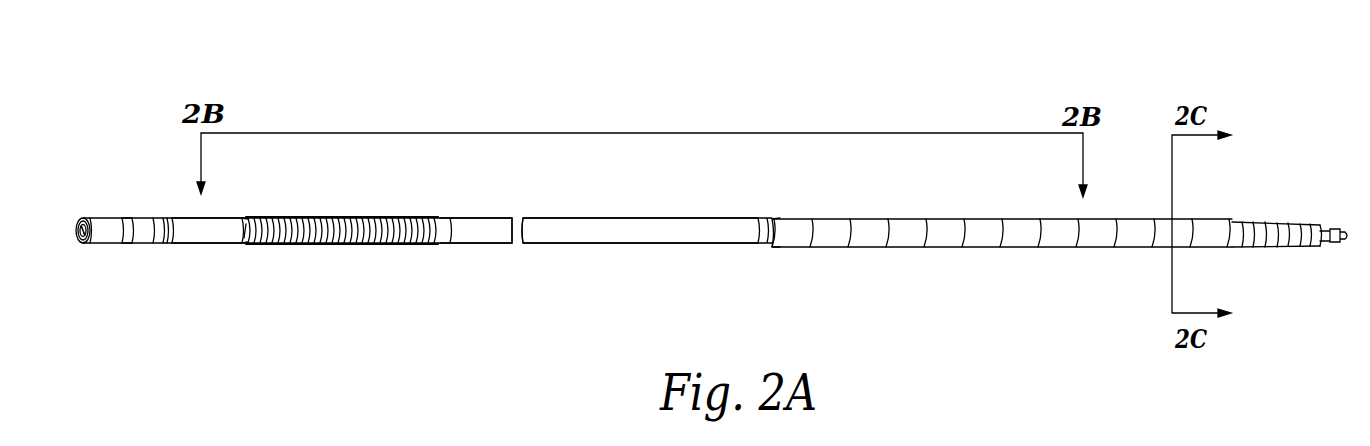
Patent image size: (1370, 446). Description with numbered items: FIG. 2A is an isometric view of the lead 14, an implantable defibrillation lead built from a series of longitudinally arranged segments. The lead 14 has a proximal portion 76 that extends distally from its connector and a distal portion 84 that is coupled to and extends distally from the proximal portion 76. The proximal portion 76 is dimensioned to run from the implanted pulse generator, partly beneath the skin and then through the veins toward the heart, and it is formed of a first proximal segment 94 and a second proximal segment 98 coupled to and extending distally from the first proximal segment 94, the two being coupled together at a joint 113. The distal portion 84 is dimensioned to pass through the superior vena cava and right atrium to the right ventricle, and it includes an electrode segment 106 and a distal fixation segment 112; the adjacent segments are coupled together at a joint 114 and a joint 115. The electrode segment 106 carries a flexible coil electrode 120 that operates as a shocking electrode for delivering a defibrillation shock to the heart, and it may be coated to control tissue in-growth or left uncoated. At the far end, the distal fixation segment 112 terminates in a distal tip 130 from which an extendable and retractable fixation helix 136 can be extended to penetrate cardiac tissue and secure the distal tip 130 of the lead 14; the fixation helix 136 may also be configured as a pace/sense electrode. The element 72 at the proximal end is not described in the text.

The lead 14 is at (352, 100).
The distal tip 130 is at (82, 217).
The fixation helix 136 is at (80, 243).
The distal fixation segment 112 is at (122, 217).
The distal portion 84 is at (235, 246).
The joint 115 is at (248, 241).
The coil electrode 120 is at (372, 218).
The electrode segment 106 is at (405, 244).
The joint 114 is at (457, 232).
The second proximal segment 98 is at (647, 244).
The joint 113 is at (758, 230).
The proximal portion 76 is at (763, 258).
The first proximal segment 94 is at (1018, 247).
The proximal tip 72 is at (1287, 216).